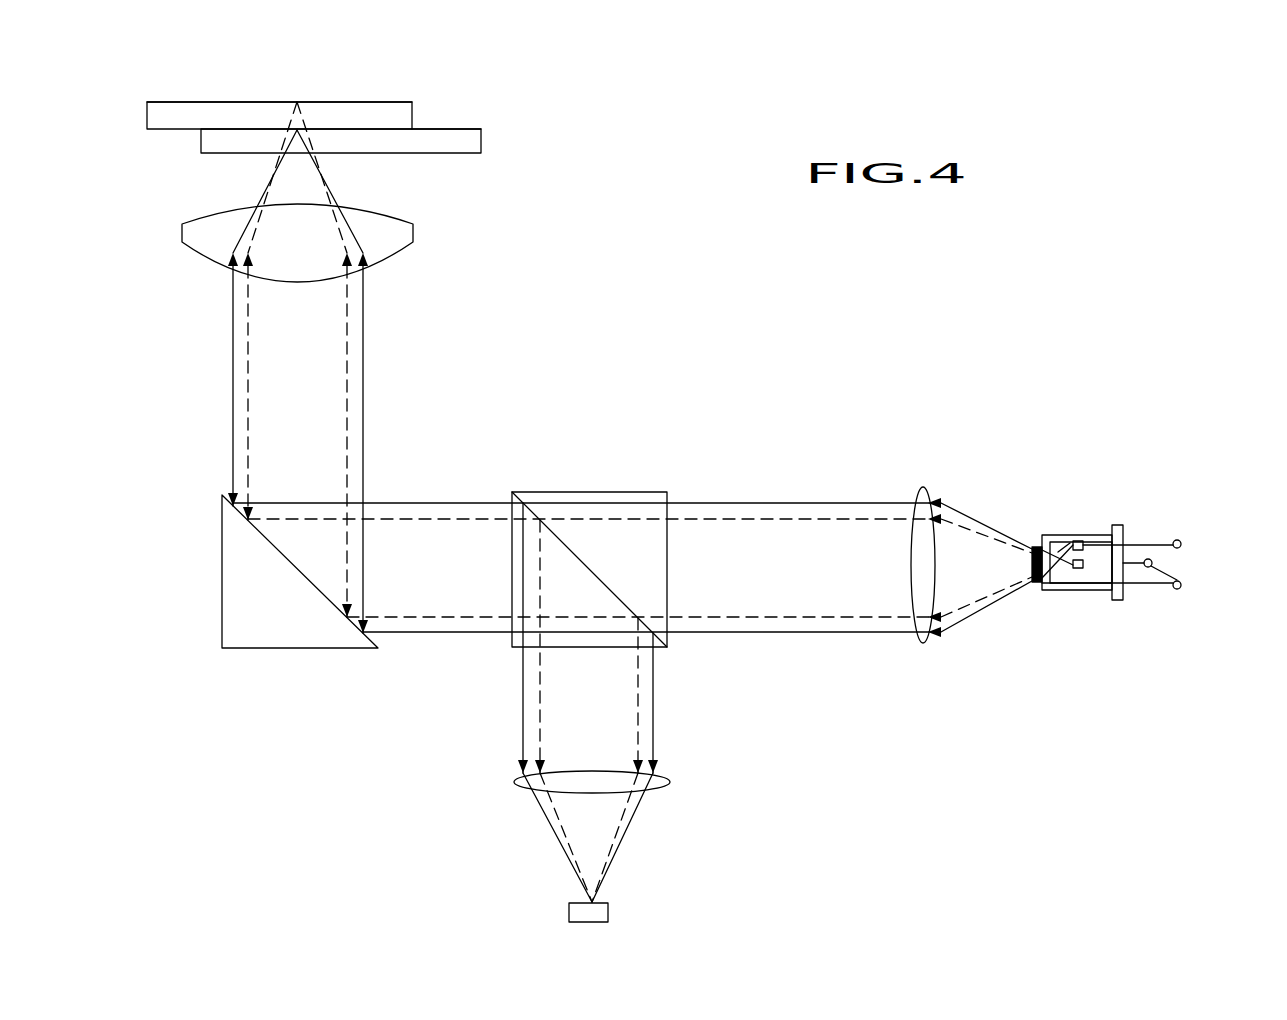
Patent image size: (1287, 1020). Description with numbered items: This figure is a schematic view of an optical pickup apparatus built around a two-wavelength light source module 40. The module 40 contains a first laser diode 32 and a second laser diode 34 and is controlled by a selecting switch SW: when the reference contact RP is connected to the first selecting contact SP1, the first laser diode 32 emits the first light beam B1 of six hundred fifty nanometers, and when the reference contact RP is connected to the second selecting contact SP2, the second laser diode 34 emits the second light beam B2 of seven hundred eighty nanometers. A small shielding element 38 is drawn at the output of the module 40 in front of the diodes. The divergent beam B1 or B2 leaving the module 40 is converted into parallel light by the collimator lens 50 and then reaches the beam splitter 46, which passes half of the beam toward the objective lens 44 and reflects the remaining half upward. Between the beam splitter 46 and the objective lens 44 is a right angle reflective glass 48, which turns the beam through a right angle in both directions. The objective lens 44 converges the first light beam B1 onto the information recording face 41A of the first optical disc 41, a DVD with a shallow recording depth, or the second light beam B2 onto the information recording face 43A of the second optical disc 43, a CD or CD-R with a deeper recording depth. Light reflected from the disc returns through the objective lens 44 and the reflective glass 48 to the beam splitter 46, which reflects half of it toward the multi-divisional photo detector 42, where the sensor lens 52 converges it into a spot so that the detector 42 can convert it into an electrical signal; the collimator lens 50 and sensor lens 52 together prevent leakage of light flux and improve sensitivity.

The second optical disc 43 is at (412, 120).
The information recording face of the second optical disc 43A is at (337, 95).
The first optical disc 41 is at (481, 145).
The information recording face of the first optical disc 41A is at (448, 130).
The objective lens 44 is at (390, 222).
The right angle reflective glass 48 is at (355, 650).
The beam splitter 46 is at (612, 490).
The first light beam B1 is at (735, 503).
The second light beam B2 is at (793, 518).
The collimator lens 50 is at (926, 636).
The light shielding member 38 is at (1030, 583).
The two-wavelength light source module 40 is at (1175, 432).
The second laser diode 34 is at (1080, 540).
The first laser diode 32 is at (1075, 569).
The reference contact RP is at (1147, 559).
The selecting switch SW is at (1175, 573).
The first selecting contact SP1 is at (1180, 589).
The second selecting contact SP2 is at (1180, 540).
The sensor lens 52 is at (670, 782).
The multi-divisional photo detector 42 is at (608, 912).